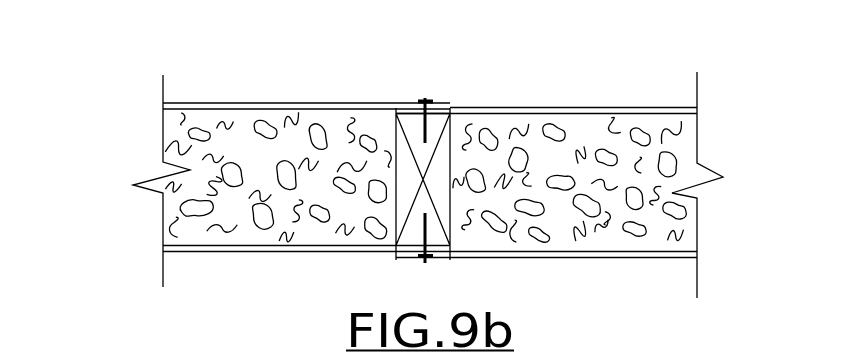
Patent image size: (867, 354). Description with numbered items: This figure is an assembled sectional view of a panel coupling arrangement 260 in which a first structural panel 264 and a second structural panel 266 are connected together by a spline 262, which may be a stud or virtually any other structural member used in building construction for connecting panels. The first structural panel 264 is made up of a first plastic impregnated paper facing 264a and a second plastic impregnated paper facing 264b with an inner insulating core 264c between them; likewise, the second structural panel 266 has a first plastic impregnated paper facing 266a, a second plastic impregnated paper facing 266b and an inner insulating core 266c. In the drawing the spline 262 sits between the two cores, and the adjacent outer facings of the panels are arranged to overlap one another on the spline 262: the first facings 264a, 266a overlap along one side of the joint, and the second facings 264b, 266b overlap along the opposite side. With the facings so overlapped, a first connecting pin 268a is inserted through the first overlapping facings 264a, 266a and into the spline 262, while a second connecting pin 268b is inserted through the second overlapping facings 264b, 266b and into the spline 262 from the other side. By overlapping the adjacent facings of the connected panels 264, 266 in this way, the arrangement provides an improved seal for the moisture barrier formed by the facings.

The wall panel assembly 260 is at (330, 83).
The spline 262 is at (437, 130).
The first structural panel 264 is at (262, 100).
The first plastic impregnated paper facing 264a is at (207, 102).
The second plastic impregnated paper facing 264b is at (237, 252).
The inner insulating core 264c is at (175, 133).
The second structural panel 266 is at (558, 105).
The first plastic impregnated paper facing 266a is at (630, 108).
The second plastic impregnated paper facing 266b is at (604, 259).
The inner insulating core 266c is at (685, 130).
The first connecting pin 268a is at (427, 100).
The second connecting pin 268b is at (425, 260).